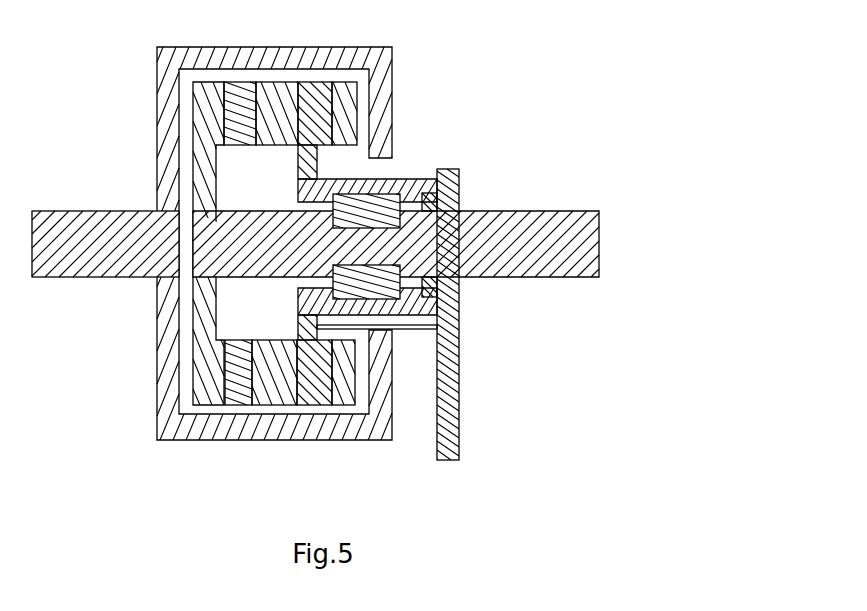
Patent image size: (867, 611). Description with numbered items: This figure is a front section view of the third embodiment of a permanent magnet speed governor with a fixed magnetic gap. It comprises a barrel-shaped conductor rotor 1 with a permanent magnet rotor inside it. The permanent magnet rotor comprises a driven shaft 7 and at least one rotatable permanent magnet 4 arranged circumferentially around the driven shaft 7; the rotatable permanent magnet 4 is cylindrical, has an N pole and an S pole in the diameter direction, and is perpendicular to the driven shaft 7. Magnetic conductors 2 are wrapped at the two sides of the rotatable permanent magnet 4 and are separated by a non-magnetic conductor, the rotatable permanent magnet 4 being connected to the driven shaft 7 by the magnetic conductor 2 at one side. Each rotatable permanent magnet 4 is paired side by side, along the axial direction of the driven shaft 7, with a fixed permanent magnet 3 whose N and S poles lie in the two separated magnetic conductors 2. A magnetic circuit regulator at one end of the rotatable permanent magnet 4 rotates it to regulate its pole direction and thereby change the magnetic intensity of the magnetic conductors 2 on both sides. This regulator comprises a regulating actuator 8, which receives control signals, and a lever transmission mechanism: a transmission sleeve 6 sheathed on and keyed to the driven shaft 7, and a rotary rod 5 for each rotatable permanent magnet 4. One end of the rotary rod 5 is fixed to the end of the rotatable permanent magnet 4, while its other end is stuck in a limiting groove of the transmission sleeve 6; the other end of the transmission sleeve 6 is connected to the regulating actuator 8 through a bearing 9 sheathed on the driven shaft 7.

The conductor rotor 1 is at (157, 162).
The magnetic conductor 2 is at (275, 247).
The fixed permanent magnet 3 is at (242, 385).
The rotatable permanent magnet 4 is at (317, 400).
The rotary rod 5 is at (437, 327).
The transmission sleeve 6 is at (390, 186).
The driven shaft 7 is at (519, 212).
The regulating actuator 8 is at (462, 413).
The bearing 9 is at (429, 193).